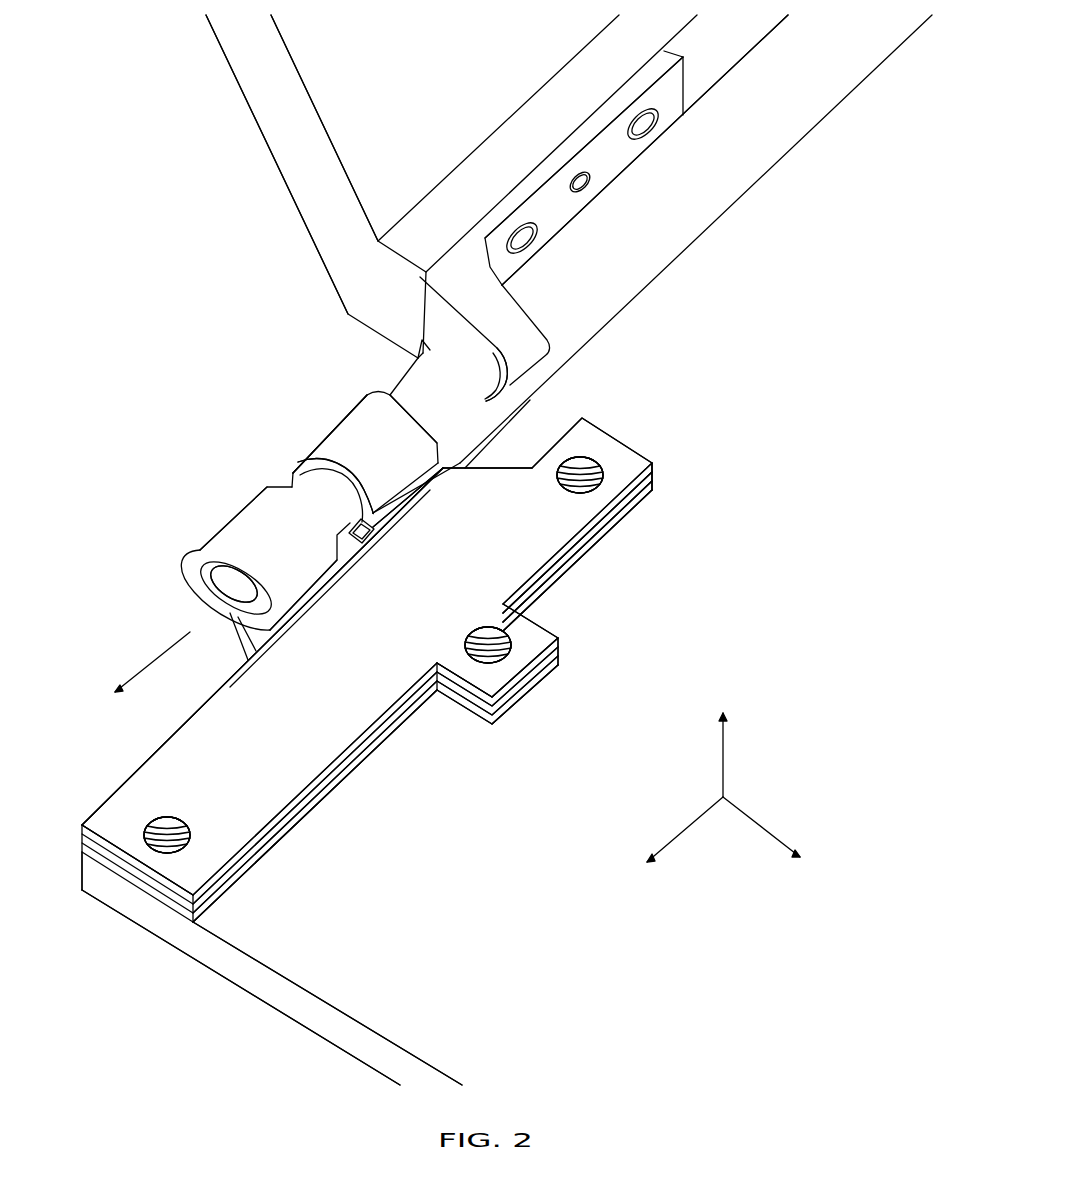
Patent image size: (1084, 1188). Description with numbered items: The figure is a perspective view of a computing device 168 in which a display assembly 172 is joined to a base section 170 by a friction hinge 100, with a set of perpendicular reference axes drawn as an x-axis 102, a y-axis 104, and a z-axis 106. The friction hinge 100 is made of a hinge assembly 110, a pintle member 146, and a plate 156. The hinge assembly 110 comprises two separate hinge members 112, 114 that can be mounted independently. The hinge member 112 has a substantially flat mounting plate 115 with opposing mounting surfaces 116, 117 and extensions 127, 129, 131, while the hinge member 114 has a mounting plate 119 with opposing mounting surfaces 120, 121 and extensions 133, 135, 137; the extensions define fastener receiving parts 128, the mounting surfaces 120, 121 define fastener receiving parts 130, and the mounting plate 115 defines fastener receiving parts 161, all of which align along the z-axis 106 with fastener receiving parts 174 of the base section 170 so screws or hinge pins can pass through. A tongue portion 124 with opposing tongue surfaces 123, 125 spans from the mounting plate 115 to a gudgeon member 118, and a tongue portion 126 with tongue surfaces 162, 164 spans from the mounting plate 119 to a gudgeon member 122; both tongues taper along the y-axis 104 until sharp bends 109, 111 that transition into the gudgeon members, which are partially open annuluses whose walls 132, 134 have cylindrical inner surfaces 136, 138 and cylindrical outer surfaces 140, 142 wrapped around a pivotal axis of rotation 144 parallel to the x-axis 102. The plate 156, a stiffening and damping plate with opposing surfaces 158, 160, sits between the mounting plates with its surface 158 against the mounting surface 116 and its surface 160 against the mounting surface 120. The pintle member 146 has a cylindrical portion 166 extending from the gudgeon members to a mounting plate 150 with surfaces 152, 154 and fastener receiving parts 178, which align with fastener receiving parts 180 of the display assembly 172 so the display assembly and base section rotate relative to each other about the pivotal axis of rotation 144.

The friction hinge 100 is at (222, 404).
The x-axis 102 is at (670, 812).
The y-axis 104 is at (775, 818).
The z-axis 106 is at (730, 740).
The sharp bend 109 is at (373, 534).
The hinge assembly 110 is at (165, 723).
The sharp bend 111 is at (209, 614).
The hinge member 112 is at (348, 772).
The hinge member 114 is at (330, 812).
The mounting plate 115 is at (266, 736).
The mounting surface 116 is at (361, 669).
The mounting surface 117 is at (375, 750).
The gudgeon member 118 is at (326, 402).
The mounting plate 119 is at (298, 837).
The mounting surface 120 is at (424, 728).
The mounting surface 121 is at (270, 869).
The gudgeon member 122 is at (218, 507).
The tongue surface 123 is at (420, 525).
The tongue portion 124 is at (452, 505).
The tongue surface 125 is at (450, 462).
The tongue portion 126 is at (265, 653).
The extension 127 is at (116, 822).
The fastener receiving part 128 is at (162, 810).
The extension 129 is at (535, 645).
The fastener receiving part 130 is at (192, 834).
The extension 131 is at (605, 450).
The wall 132 is at (322, 436).
The extension 133 is at (132, 896).
The wall 134 is at (215, 539).
The extension 135 is at (535, 700).
The cylindrical inner surface 136 is at (300, 465).
The extension 137 is at (658, 492).
The cylindrical inner surface 138 is at (202, 583).
The cylindrical outer surface 140 is at (355, 448).
The cylindrical outer surface 142 is at (250, 530).
The pivotal axis of rotation 144 is at (143, 650).
The pintle member 146 is at (419, 378).
The mounting plate 150 is at (676, 128).
The surface 152 is at (622, 180).
The surface 154 is at (592, 101).
The plate 156 is at (566, 576).
The surface 158 is at (578, 556).
The surface 160 is at (612, 535).
The fastener receiving part 161 is at (180, 850).
The tongue surface 162 is at (290, 627).
The tongue surface 164 is at (237, 660).
The cylindrical portion 166 is at (475, 379).
The computing device 168 is at (234, 137).
The base section 170 is at (448, 846).
The display assembly 172 is at (408, 58).
The fastener receiving part 174 is at (151, 827).
The fastener receiving part 178 is at (642, 143).
The fastener receiving part 180 is at (637, 117).